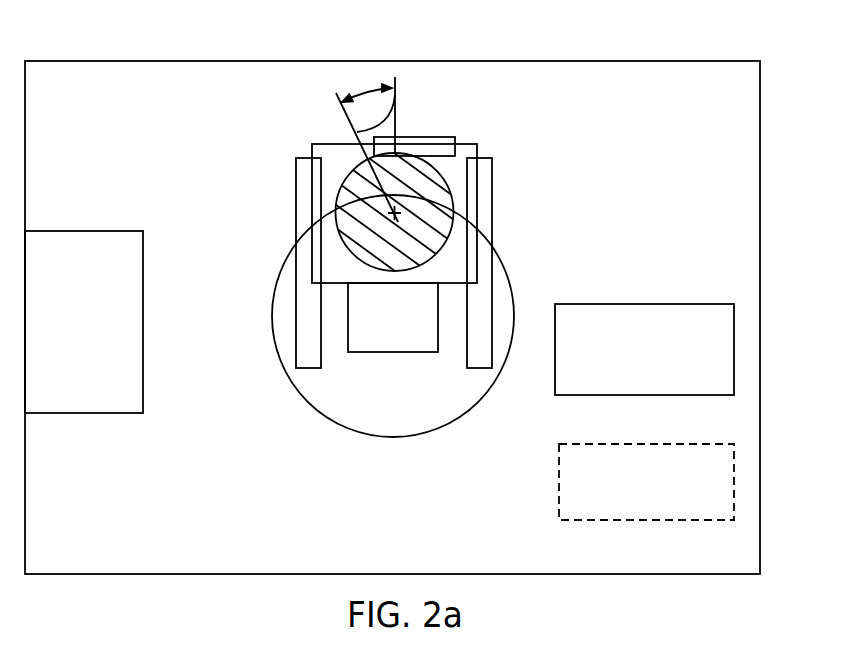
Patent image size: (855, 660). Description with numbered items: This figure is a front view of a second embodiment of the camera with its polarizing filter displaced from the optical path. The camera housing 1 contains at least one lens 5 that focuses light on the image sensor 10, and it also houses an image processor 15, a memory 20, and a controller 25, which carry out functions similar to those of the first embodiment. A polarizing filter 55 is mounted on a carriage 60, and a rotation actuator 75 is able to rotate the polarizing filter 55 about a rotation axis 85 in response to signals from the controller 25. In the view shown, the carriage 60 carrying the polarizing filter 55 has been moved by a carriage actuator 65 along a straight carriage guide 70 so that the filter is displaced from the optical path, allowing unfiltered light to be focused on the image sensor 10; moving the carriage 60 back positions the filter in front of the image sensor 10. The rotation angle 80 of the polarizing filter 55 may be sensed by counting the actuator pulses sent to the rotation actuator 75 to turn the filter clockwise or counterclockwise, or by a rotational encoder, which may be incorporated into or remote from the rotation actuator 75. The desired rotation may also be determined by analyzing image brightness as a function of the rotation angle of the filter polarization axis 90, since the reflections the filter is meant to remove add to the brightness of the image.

The camera housing 1 is at (636, 60).
The lens 5 is at (348, 432).
The image sensor 10 is at (393, 352).
The image processor 15 is at (734, 348).
The memory 20 is at (80, 230).
The controller 25 is at (737, 483).
The polarizing filter 55 is at (452, 199).
The carriage 60 is at (327, 144).
The carriage actuator 65 is at (493, 198).
The carriage guide 70 is at (301, 158).
The rotation actuator 75 is at (434, 137).
The rotation angle 80 is at (363, 90).
The rotation axis 85 is at (397, 216).
The filter polarization axis 90 is at (397, 86).